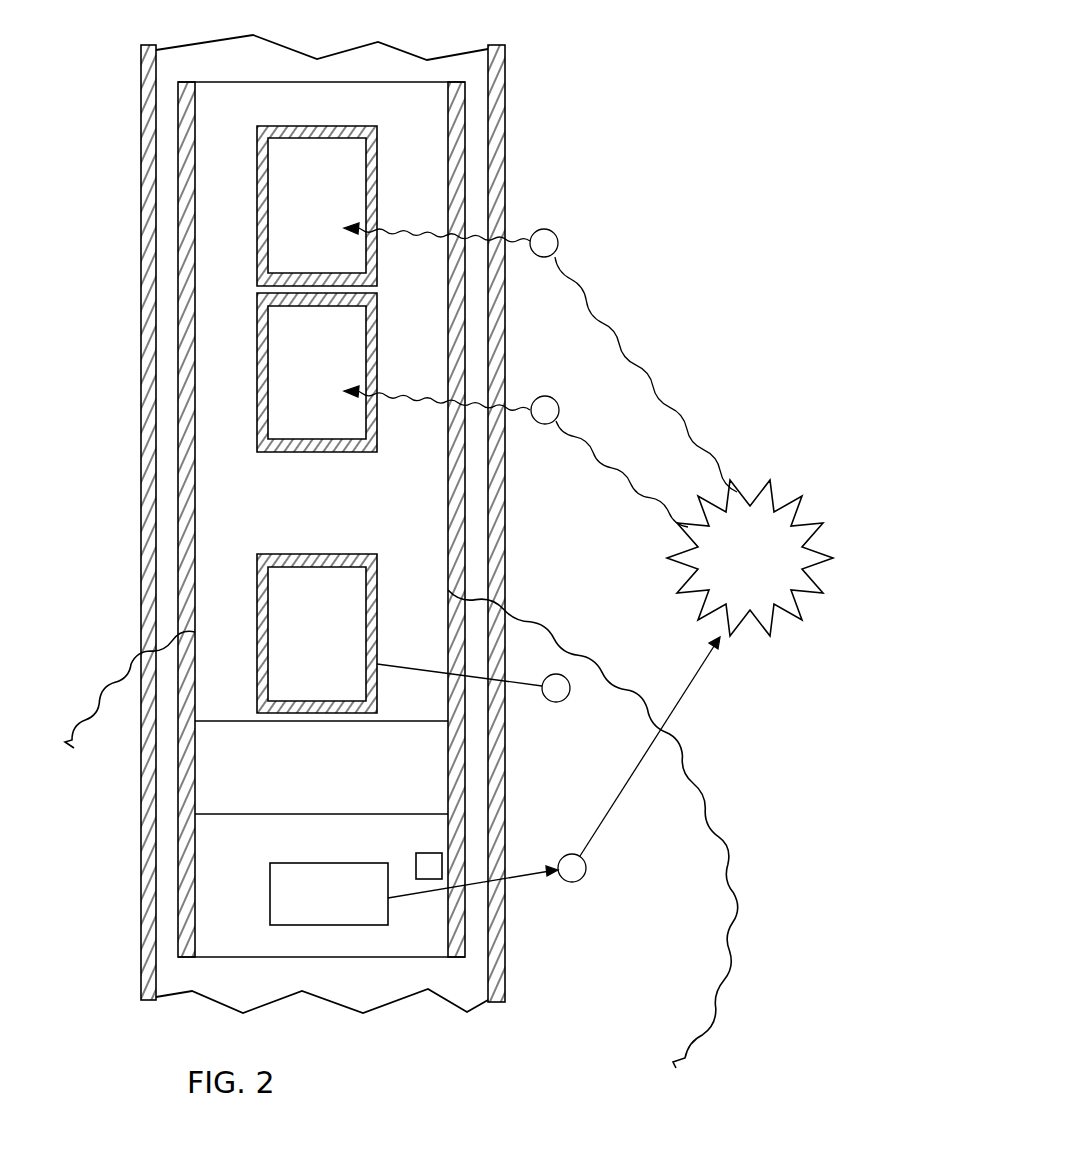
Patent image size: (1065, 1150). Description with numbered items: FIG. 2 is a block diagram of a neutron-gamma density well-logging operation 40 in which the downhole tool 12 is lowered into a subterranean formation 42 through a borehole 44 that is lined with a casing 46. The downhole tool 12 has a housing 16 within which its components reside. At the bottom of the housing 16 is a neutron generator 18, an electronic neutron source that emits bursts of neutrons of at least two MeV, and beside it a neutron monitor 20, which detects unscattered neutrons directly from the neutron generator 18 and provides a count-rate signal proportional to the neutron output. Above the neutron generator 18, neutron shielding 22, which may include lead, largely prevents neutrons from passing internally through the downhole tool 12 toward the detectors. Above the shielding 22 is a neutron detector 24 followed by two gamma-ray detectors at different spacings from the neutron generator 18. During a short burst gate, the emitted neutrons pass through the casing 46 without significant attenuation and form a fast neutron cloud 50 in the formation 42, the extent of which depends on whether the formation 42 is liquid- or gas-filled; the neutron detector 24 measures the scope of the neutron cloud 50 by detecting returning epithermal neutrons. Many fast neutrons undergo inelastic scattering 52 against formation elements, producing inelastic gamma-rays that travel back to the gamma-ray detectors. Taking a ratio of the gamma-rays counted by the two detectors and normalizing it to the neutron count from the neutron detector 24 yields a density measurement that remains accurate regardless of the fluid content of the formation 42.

The downhole tool 12 is at (364, 490).
The housing 16 is at (465, 177).
The neutron generator 18 is at (343, 863).
The neutron monitor 20 is at (443, 855).
The neutron shielding 22 is at (435, 775).
The neutron detector 24 is at (297, 633).
The neutron-gamma density well-logging operation 40 is at (612, 80).
The subterranean formation 42 is at (727, 195).
The borehole 44 is at (278, 42).
The casing 46 is at (498, 131).
The fast neutron cloud 50 is at (590, 642).
The inelastic scattering 52 is at (755, 486).